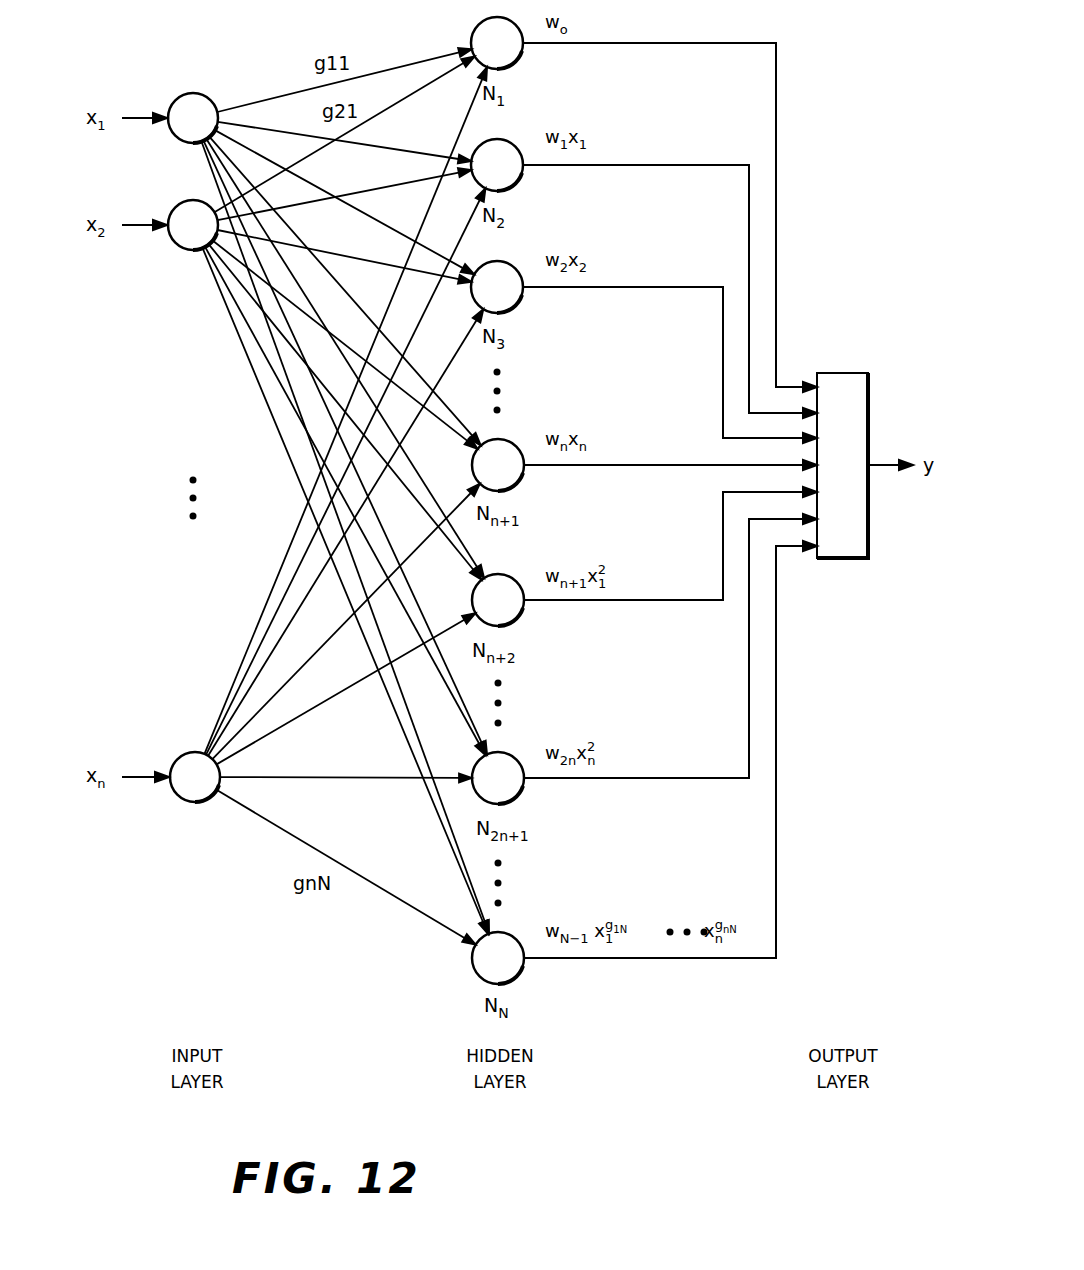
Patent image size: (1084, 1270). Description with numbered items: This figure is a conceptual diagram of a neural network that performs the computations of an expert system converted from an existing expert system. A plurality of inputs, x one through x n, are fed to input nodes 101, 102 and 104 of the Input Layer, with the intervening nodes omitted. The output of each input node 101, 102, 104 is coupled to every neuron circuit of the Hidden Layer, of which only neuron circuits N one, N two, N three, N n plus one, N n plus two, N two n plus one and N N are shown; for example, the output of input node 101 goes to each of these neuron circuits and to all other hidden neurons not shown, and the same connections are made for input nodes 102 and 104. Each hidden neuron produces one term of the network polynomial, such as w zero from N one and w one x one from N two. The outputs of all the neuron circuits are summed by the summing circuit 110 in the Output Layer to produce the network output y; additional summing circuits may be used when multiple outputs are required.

The input node 101 is at (182, 92).
The input node 102 is at (181, 249).
The input node 104 is at (183, 801).
The summing circuit 110 is at (851, 371).